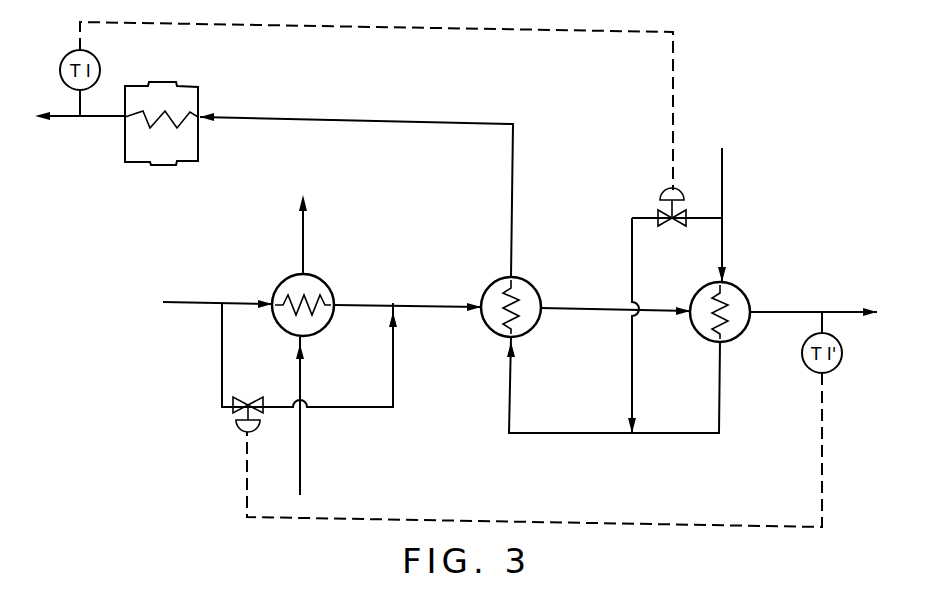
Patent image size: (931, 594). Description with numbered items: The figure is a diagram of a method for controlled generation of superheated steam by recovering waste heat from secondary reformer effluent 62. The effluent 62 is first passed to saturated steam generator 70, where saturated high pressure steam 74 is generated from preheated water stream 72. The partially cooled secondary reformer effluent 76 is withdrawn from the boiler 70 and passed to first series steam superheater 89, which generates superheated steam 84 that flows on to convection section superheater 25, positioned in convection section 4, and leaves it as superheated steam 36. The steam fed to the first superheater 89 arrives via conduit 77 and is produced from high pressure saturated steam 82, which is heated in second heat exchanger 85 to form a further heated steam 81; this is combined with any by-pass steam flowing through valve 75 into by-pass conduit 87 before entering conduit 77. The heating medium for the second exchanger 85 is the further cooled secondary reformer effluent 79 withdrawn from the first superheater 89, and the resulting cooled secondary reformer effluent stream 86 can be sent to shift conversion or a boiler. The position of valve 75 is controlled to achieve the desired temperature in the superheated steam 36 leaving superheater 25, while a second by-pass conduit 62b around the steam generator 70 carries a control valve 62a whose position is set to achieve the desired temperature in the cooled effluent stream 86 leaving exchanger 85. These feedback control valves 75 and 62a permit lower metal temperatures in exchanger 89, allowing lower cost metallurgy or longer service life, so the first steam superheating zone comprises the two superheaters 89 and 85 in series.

The convection section 4 is at (199, 104).
The convection section superheater 25 is at (178, 125).
The superheated steam 36 is at (64, 118).
The superheated steam 84 is at (340, 120).
The valve 75 is at (660, 192).
The high pressure saturated steam 82 is at (724, 193).
The saturated high pressure steam 74 is at (300, 237).
The saturated steam generator 70 is at (315, 276).
The partially cooled secondary reformer effluent 76 is at (368, 304).
The secondary reformer effluent 62 is at (202, 300).
The control valve 62a is at (242, 430).
The by-pass conduit 62b is at (395, 380).
The preheated water stream 72 is at (302, 447).
The first series steam superheater 89 is at (537, 286).
The by-pass conduit 87 is at (634, 265).
The further cooled secondary reformer effluent 79 is at (562, 311).
The steam conduit 77 is at (553, 436).
The further heated steam 81 is at (672, 436).
The secondary reformer effluent stream 86 is at (762, 312).
The second heat exchanger 85 is at (740, 338).